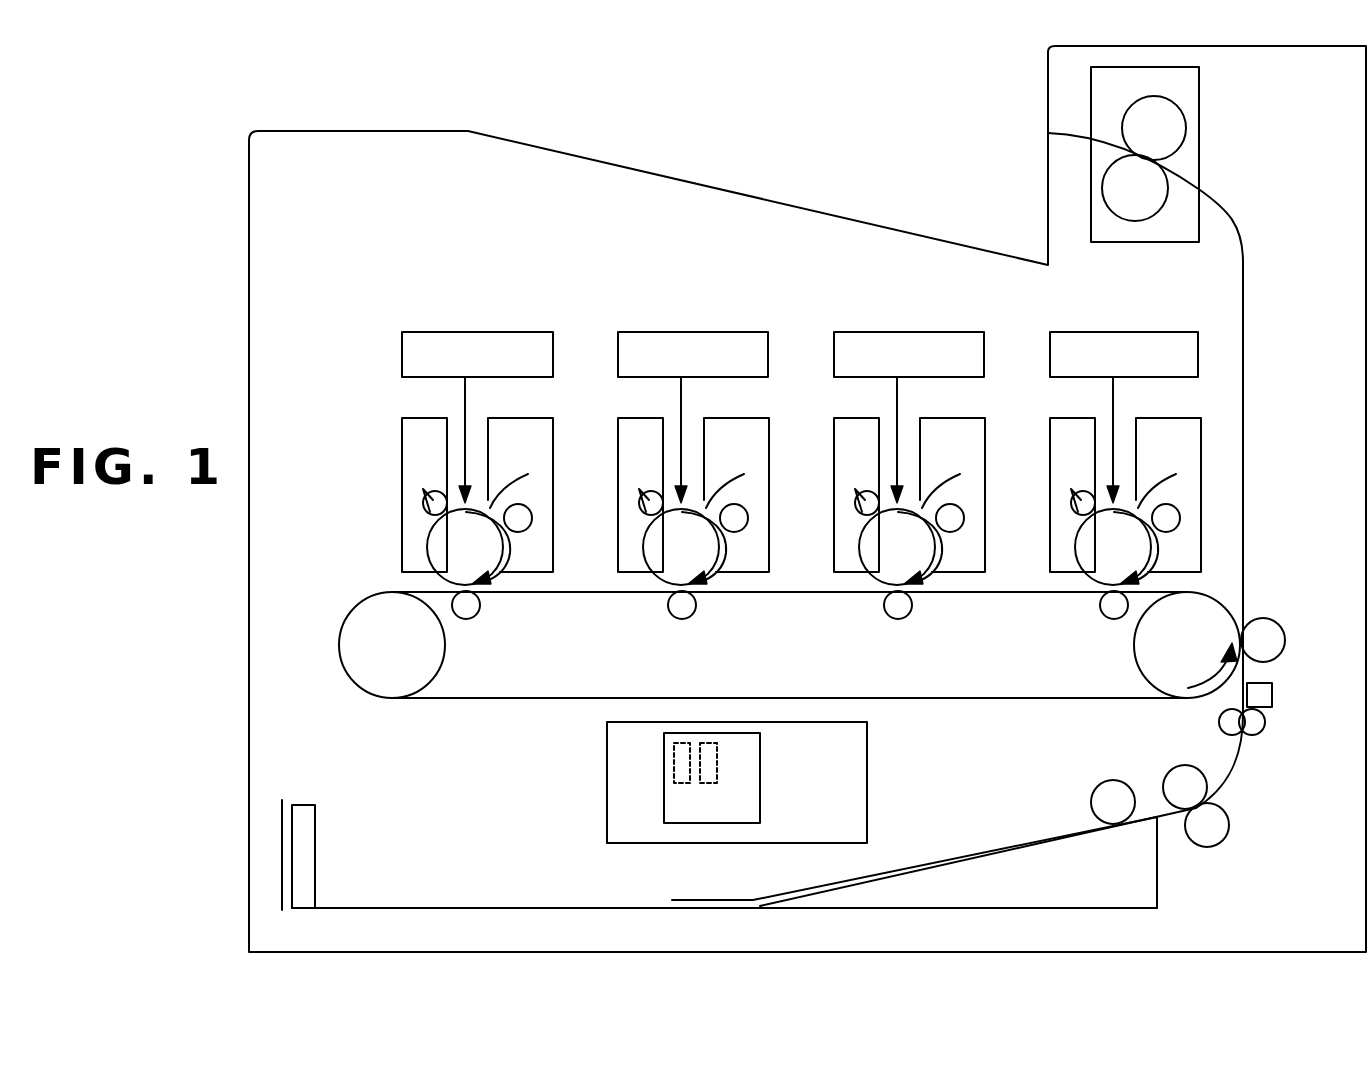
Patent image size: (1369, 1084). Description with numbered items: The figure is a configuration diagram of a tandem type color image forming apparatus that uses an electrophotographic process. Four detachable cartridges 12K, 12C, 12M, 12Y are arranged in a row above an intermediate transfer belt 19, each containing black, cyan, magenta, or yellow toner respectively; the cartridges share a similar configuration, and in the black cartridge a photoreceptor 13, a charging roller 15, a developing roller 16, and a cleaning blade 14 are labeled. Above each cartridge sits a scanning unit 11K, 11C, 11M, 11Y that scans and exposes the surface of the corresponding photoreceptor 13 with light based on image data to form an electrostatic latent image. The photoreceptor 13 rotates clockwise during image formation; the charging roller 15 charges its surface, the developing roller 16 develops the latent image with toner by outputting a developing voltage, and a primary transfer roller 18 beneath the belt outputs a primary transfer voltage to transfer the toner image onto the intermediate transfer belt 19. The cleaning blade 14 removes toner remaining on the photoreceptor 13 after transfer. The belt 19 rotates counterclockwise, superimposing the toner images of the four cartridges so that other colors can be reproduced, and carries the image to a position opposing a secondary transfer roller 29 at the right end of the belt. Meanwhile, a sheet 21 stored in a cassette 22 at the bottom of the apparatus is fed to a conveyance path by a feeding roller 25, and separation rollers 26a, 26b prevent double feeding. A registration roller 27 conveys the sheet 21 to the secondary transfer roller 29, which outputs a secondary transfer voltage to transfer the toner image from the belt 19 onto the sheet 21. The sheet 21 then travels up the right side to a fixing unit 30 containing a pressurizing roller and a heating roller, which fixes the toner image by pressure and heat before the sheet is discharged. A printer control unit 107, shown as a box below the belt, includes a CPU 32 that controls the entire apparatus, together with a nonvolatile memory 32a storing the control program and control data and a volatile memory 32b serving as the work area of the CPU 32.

The scanning unit 11K is at (476, 331).
The scanning unit 11C is at (692, 331).
The scanning unit 11M is at (908, 331).
The scanning unit 11Y is at (1124, 331).
The cartridge 12K is at (432, 514).
The cartridge 12C is at (603, 410).
The cartridge 12M is at (819, 410).
The cartridge 12Y is at (1035, 410).
The photoreceptor 13 is at (427, 548).
The cleaning blade 14 is at (423, 500).
The charging roller 15 is at (436, 491).
The developing roller 16 is at (533, 518).
The primary transfer roller 18 is at (480, 617).
The intermediate transfer belt 19 is at (466, 700).
The sheet 21 is at (896, 868).
The cassette 22 is at (1157, 880).
The feeding roller 25 is at (1113, 780).
The separation roller 26a is at (1185, 765).
The separation roller 26b is at (1230, 825).
The registration roller 27 is at (1252, 736).
The secondary transfer roller 29 is at (1274, 620).
The fixing unit 30 is at (1203, 130).
The central processing unit (CPU) 32 is at (720, 778).
The nonvolatile memory 32a is at (674, 770).
The volatile memory 32b is at (717, 776).
The printer control unit 107 is at (700, 782).